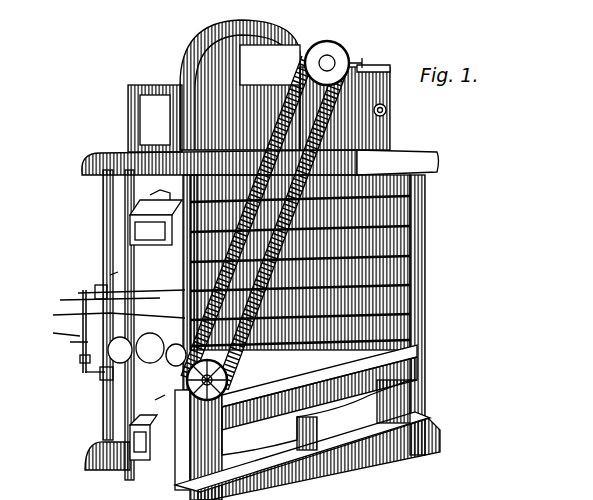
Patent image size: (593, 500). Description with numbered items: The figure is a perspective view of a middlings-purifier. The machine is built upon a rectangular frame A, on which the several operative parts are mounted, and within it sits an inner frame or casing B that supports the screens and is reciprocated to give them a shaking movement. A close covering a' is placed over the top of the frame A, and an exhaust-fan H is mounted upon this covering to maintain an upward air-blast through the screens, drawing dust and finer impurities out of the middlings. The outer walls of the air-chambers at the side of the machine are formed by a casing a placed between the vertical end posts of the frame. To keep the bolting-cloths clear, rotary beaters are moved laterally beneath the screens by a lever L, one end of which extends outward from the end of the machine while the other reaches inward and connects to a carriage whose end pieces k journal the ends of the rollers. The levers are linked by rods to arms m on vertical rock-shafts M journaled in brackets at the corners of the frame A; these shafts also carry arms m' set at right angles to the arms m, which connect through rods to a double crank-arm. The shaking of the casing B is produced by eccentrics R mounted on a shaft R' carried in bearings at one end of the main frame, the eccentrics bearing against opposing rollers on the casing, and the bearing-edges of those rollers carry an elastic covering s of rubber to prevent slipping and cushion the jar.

The rectangular frame A is at (232, 452).
The exhaust-fan H is at (190, 66).
The close covering a' is at (141, 118).
The outer casing a is at (300, 262).
The inner frame or casing B is at (160, 189).
The lever L is at (100, 290).
The arms m is at (119, 309).
The arms m' is at (69, 346).
The vertical rock-shafts M is at (82, 357).
The elastic covering s is at (80, 371).
The eccentrics R is at (124, 410).
The shaft R' is at (164, 407).
The end pieces k is at (110, 275).